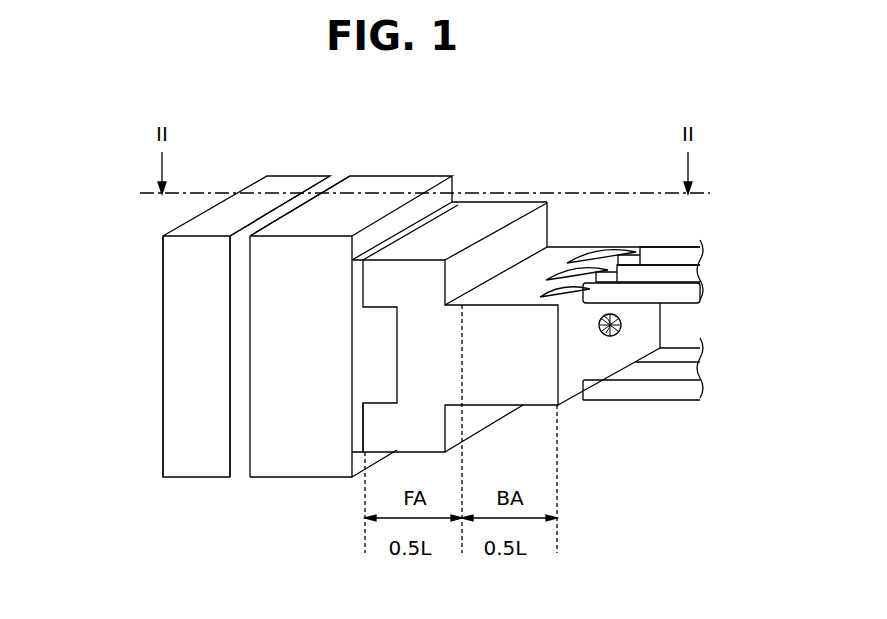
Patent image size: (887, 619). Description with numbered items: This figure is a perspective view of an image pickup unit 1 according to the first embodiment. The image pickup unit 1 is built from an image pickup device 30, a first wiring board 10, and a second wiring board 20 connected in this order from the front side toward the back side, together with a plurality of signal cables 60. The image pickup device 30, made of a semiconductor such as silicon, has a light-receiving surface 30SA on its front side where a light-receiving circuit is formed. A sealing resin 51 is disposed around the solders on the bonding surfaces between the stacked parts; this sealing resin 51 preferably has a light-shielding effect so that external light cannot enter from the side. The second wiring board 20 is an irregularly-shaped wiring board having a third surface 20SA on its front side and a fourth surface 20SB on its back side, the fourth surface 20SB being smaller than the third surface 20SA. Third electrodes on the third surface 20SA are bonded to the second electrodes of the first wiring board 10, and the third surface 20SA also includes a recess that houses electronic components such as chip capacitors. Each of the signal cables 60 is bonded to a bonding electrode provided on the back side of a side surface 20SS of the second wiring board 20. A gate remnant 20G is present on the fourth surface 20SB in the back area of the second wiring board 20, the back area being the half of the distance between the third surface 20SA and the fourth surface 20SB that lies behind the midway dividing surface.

The image pickup unit 1 is at (78, 181).
The image pickup device 30 is at (294, 175).
The light-receiving surface 30SA is at (153, 432).
The sealing resin 51 is at (462, 201).
The first wiring board 10 is at (394, 175).
The second wiring board 20 is at (503, 200).
The side surface 20SS is at (559, 238).
The third surface 20SA is at (352, 435).
The fourth surface 20SB is at (597, 362).
The gate remnant 20G is at (624, 326).
The signal cables 60 is at (666, 246).